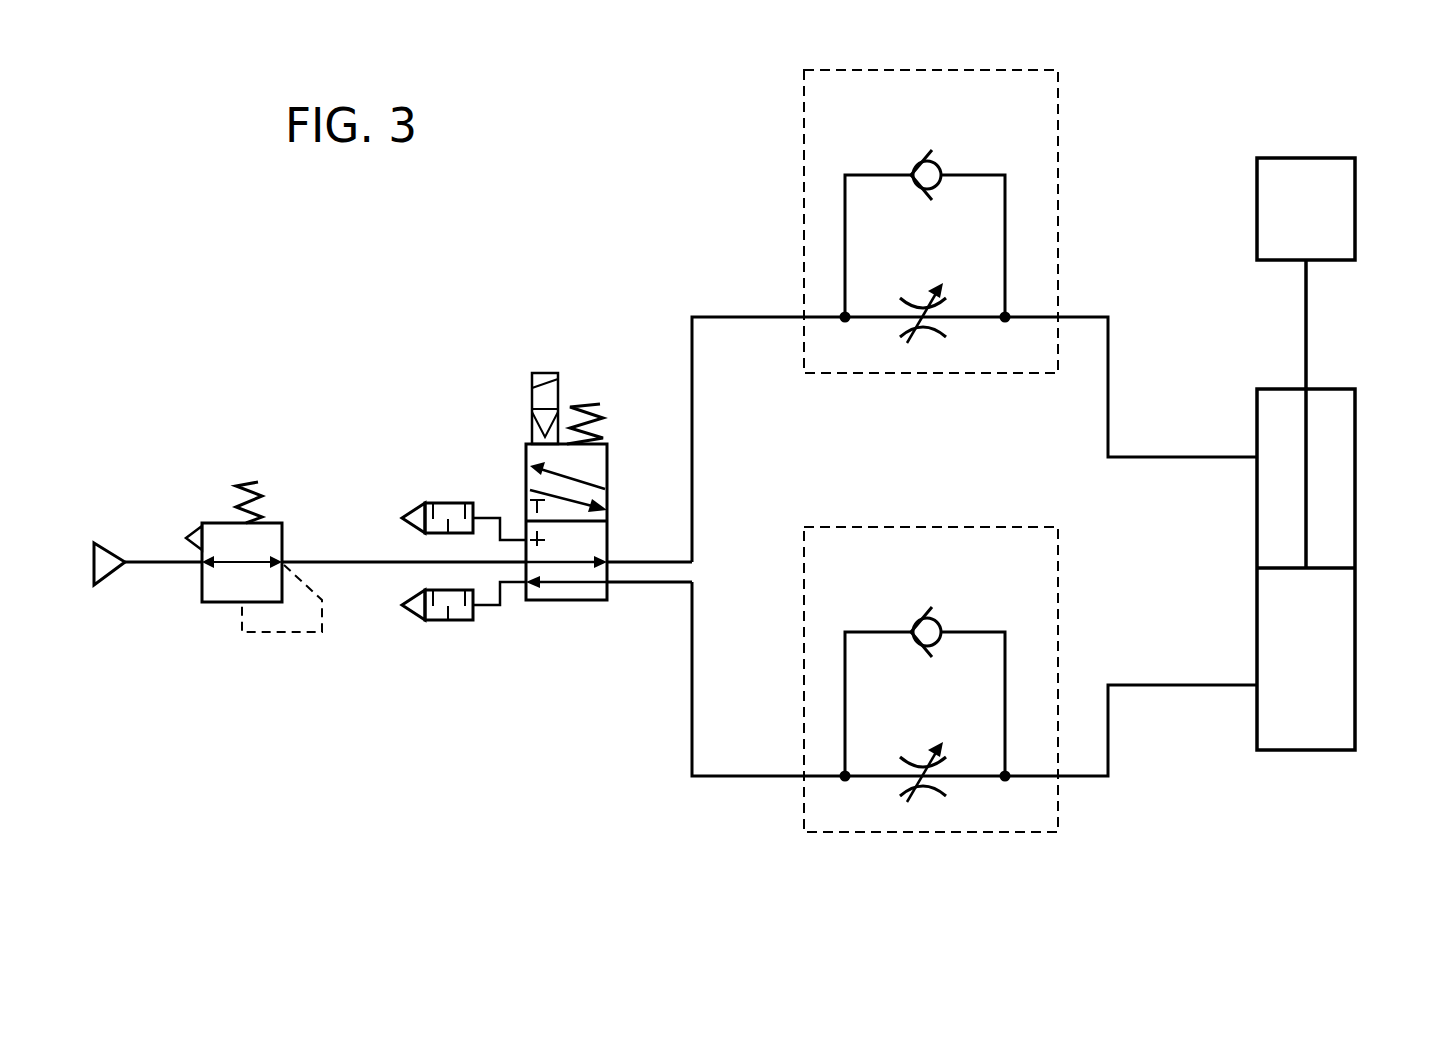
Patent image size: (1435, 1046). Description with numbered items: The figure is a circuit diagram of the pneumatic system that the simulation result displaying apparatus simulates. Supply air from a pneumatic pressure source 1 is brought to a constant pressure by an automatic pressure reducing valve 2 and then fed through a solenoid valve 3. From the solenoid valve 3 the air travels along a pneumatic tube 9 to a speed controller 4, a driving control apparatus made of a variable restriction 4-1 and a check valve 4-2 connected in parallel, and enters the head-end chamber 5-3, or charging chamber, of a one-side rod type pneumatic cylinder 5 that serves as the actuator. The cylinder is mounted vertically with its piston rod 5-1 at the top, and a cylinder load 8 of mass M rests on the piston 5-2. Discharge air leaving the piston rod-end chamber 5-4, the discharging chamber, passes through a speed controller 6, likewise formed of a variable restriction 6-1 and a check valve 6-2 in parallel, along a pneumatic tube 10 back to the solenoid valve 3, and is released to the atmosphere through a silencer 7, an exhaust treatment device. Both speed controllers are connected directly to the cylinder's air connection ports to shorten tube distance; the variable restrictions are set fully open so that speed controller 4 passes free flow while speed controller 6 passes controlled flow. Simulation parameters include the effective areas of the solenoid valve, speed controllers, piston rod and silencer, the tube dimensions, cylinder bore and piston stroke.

The pneumatic pressure source 1 is at (107, 552).
The automatic pressure reducing valve 2 is at (219, 604).
The solenoid valve 3 is at (566, 603).
The speed controller 4 is at (931, 679).
The variable restriction 4-1 is at (906, 756).
The check valve 4-2 is at (915, 617).
The pneumatic cylinder 5 is at (1302, 505).
The piston rod 5-1 is at (1308, 340).
The piston 5-2 is at (1337, 569).
The head-end chamber 5-3 is at (1268, 608).
The piston rod-end chamber 5-4 is at (1270, 503).
The speed controller 6 is at (931, 221).
The variable restriction 6-1 is at (910, 303).
The check valve 6-2 is at (920, 160).
The silencer 7 is at (449, 503).
The cylinder load 8 is at (1357, 210).
The pneumatic tube 9 is at (692, 625).
The pneumatic tube 10 is at (692, 455).